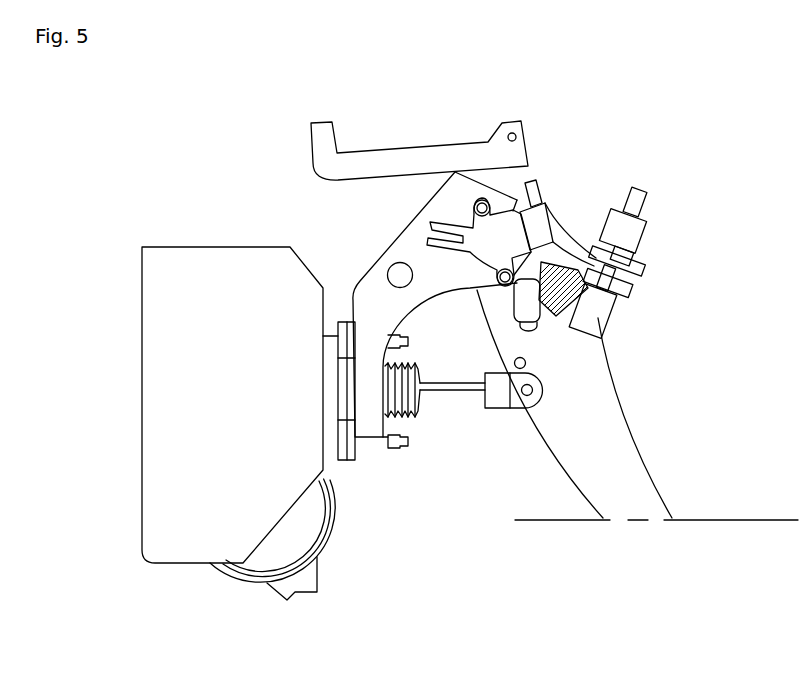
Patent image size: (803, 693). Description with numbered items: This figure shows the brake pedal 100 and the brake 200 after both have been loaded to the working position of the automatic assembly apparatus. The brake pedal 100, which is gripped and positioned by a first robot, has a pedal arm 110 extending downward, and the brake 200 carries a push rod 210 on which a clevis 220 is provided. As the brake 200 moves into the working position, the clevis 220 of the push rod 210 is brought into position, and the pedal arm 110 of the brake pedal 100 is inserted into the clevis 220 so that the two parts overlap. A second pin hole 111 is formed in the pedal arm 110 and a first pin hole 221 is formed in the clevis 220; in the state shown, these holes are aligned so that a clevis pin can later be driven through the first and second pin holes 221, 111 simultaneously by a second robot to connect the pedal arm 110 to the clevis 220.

The brake pedal 100 is at (458, 192).
The pedal arm 110 is at (627, 459).
The second pin hole 111 is at (526, 363).
The brake 200 is at (155, 422).
The push rod 210 is at (442, 391).
The clevis 220 is at (500, 409).
The first pin hole 221 is at (533, 390).